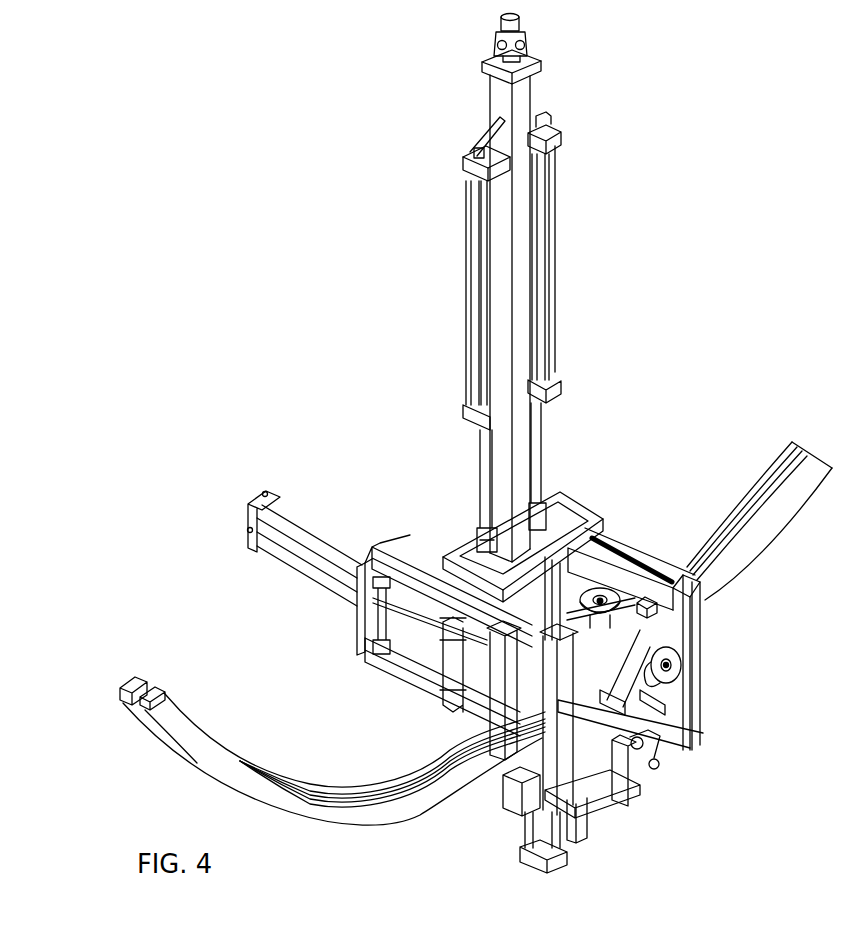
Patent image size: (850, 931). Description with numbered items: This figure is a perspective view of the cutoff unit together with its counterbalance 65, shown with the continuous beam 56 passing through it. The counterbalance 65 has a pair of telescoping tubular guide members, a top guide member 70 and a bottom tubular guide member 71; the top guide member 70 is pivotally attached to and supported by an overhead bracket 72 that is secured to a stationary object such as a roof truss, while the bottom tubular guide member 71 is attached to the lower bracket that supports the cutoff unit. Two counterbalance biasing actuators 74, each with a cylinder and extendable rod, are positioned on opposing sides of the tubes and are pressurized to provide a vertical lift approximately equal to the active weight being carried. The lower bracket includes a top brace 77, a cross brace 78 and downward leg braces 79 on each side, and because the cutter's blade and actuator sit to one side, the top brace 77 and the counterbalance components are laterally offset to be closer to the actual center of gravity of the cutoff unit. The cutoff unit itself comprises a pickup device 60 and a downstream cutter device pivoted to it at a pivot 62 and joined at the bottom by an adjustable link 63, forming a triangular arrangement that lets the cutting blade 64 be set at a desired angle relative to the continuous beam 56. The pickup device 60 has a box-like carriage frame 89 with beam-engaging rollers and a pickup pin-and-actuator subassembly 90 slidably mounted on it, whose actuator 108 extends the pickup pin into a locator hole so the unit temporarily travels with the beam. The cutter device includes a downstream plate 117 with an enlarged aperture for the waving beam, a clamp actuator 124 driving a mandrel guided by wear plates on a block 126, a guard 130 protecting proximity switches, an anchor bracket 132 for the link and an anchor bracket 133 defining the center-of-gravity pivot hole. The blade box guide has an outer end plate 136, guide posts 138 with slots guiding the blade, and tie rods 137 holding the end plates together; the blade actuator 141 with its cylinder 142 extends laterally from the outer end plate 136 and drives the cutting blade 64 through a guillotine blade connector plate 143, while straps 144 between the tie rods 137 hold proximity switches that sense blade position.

The continuous beam 56 is at (131, 714).
The pickup device 60 is at (678, 697).
The pivot 62 is at (662, 707).
The adjustable link 63 is at (640, 712).
The cutting blade 64 is at (450, 667).
The counterbalance 65 is at (575, 302).
The top guide member 70 is at (520, 242).
The bottom tubular guide member 71 is at (550, 450).
The overhead bracket 72 is at (525, 42).
The actuators 74 is at (493, 207).
The top brace 77 is at (568, 510).
The cross brace 78 is at (617, 515).
The downward leg braces 79 is at (697, 603).
The carriage frame 89 is at (660, 600).
The pickup pin-and-actuator subassembly 90 is at (607, 590).
The actuator 108 is at (670, 670).
The downstream plate 117 is at (513, 673).
The clamp actuator 124 is at (553, 873).
The block 126 is at (641, 749).
The guard 130 is at (503, 808).
The anchor bracket 132 is at (590, 817).
The anchor bracket 133 is at (630, 787).
The outer end plate 136 is at (385, 548).
The tie rods 137 is at (385, 655).
The guide post 138 is at (407, 567).
The actuator 141 is at (266, 546).
The cylinder 142 is at (310, 520).
The guillotine blade connector plate 143 is at (423, 640).
The straps 144 is at (477, 682).